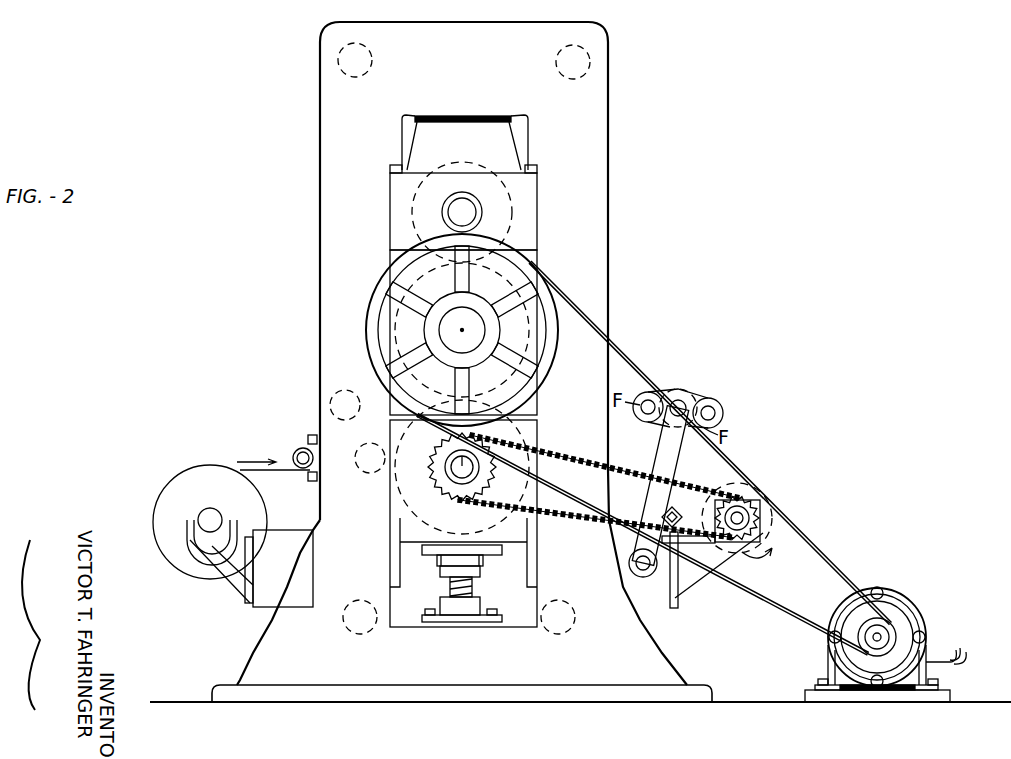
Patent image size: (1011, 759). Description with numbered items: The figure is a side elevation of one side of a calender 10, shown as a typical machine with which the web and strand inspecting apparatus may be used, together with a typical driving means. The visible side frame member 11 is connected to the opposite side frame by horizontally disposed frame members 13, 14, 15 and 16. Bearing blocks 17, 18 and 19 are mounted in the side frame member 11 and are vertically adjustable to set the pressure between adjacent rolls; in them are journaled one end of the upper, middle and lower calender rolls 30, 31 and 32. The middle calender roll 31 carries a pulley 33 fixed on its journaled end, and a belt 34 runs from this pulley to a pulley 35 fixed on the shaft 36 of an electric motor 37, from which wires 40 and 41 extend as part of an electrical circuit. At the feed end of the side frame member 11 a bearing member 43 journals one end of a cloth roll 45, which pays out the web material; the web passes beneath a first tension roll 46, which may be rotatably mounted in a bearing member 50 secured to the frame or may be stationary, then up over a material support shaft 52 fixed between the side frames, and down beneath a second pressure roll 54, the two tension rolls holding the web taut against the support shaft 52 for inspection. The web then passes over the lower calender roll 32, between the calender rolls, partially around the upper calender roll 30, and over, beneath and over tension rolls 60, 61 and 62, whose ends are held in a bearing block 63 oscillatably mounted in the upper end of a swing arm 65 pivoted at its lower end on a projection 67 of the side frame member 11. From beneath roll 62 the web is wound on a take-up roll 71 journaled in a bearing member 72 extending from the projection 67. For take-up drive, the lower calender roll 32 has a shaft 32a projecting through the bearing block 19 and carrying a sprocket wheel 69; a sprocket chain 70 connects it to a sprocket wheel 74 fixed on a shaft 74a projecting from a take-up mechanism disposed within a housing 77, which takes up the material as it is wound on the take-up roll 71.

The calender 10 is at (612, 240).
The side frame member 11 is at (609, 292).
The horizontally disposed frame member 13 is at (360, 634).
The horizontally disposed frame member 14 is at (560, 634).
The horizontally disposed frame member 15 is at (372, 60).
The horizontally disposed frame member 16 is at (557, 64).
The bearing block 17 is at (531, 218).
The bearing block 18 is at (535, 357).
The bearing block 19 is at (392, 511).
The upper calender roll 30 is at (462, 162).
The middle calender roll 31 is at (523, 400).
The lower calender roll 32 is at (522, 442).
The shaft 32a is at (452, 462).
The pulley 33 is at (368, 311).
The belt 34 is at (805, 530).
The pulley 35 is at (858, 622).
The shaft 36 is at (890, 630).
The electric motor 37 is at (828, 668).
The wire 40 is at (955, 650).
The wire 41 is at (966, 654).
The bearing member 43 is at (240, 585).
The cloth roll 45 is at (188, 462).
The first tension roll 46 is at (300, 474).
The bearing member 50 is at (293, 450).
The shaft 52 is at (348, 420).
The second pressure roll 54 is at (355, 465).
The tension roll 60 is at (645, 413).
The tension roll 61 is at (690, 390).
The tension roll 62 is at (713, 412).
The bearing block 63 is at (698, 396).
The swing arm 65 is at (664, 468).
The projection 67 is at (662, 607).
The sprocket wheel 69 is at (442, 480).
The sprocket chain 70 is at (575, 472).
The take-up roll 71 is at (733, 490).
The bearing member 72 is at (702, 583).
The sprocket wheel 74 is at (745, 500).
The shaft 74a is at (745, 514).
The housing 77 is at (766, 550).